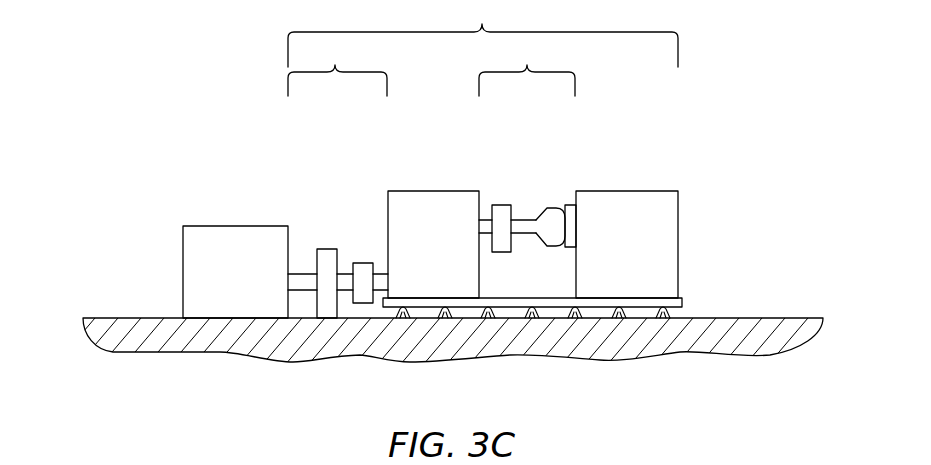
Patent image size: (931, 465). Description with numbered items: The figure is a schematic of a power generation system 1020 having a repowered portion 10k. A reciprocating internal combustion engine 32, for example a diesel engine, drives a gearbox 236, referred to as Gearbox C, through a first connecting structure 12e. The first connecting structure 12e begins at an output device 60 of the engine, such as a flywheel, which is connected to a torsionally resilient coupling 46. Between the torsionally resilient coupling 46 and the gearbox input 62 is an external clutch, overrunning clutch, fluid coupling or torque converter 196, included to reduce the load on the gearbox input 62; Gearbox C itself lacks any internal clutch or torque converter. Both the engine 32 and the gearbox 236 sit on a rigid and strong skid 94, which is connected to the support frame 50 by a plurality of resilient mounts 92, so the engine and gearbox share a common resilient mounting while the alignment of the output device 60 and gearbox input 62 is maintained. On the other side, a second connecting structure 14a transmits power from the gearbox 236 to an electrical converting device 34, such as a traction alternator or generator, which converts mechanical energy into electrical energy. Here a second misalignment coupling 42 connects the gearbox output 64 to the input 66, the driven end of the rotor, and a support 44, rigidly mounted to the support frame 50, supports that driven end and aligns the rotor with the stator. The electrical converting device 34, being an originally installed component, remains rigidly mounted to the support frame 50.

The repowered portion 10k is at (483, 33).
The second connecting structure 14a is at (337, 68).
The first connecting structure 12e is at (527, 68).
The power generation system 1020 is at (704, 142).
The electrical converting device 34 is at (219, 236).
The input 66 is at (303, 275).
The support 44 is at (326, 252).
The second misalignment coupling 42 is at (363, 265).
The gearbox output 64 is at (381, 275).
The gearbox 236 is at (426, 200).
The gearbox input 62 is at (483, 234).
The external clutch, overrunning clutch, fluid coupling or torque converter 196 is at (498, 206).
The torsionally resilient coupling 46 is at (553, 225).
The output device 60 is at (570, 213).
The reciprocating internal combustion engine 32 is at (667, 217).
The skid 94 is at (683, 300).
The resilient mounts 92 is at (403, 318).
The support frame 50 is at (103, 318).